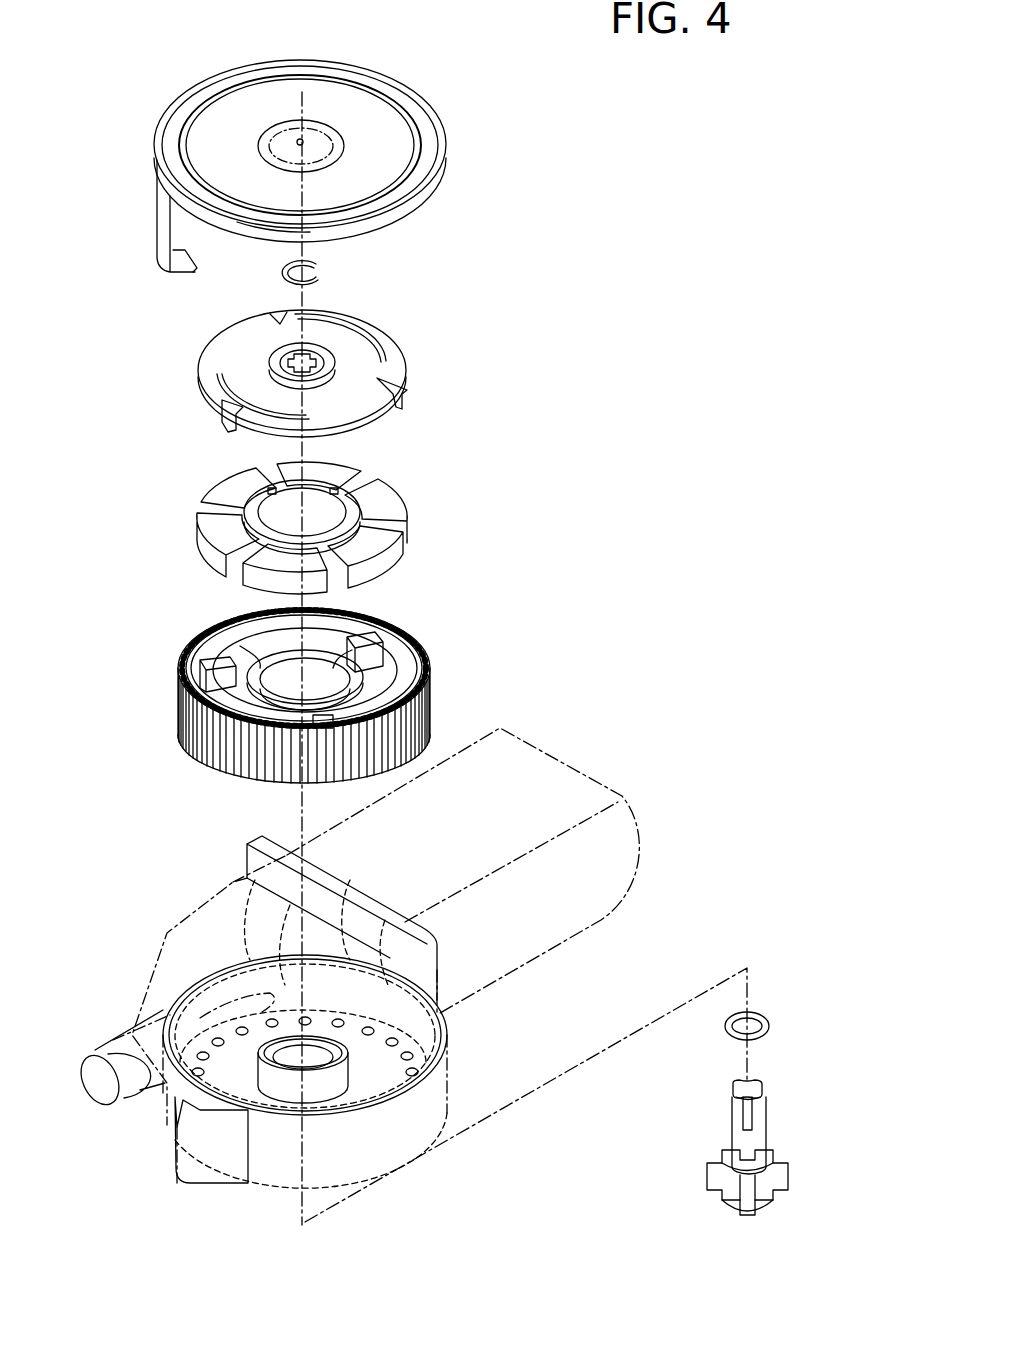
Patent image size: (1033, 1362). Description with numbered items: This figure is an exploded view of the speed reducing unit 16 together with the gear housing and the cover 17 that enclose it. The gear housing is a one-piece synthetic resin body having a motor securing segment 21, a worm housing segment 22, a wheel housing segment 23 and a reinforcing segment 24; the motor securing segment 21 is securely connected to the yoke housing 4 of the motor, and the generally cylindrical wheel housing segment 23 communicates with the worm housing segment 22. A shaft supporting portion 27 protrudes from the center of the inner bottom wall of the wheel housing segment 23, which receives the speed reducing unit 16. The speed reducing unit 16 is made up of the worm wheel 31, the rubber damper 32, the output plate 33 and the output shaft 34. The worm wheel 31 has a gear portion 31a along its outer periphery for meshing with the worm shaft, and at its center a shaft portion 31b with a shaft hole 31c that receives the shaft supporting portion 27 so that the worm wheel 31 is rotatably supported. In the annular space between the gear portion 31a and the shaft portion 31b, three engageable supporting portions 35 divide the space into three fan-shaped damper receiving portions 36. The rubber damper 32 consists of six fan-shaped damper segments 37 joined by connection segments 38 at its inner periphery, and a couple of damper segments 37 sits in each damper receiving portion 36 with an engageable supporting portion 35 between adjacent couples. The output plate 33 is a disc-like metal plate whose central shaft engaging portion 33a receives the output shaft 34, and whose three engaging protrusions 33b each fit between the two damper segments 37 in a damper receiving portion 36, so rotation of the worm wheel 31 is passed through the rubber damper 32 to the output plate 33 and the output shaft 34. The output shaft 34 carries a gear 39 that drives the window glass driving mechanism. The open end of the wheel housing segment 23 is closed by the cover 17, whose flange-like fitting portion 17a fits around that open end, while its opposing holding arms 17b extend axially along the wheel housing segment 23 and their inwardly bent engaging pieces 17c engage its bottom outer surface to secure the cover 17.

The yoke housing 4 is at (582, 910).
The speed reducing unit 16 is at (503, 449).
The cover 17 is at (427, 110).
The fitting portion 17a is at (413, 207).
The holding arm 17b is at (157, 216).
The engaging piece 17c is at (183, 280).
The motor securing segment 21 is at (245, 863).
The worm housing segment 22 is at (132, 1035).
The wheel housing segment 23 is at (430, 1087).
The reinforcing segment 24 is at (193, 937).
The shaft supporting portion 27 is at (305, 1092).
The worm wheel 31 is at (391, 629).
The gear portion 31a is at (423, 710).
The shaft portion 31b is at (262, 660).
The shaft hole 31c is at (325, 670).
The rubber damper 32 is at (470, 494).
The output plate 33 is at (416, 335).
The shaft engaging portion 33a is at (320, 357).
The engaging protrusion 33b is at (222, 418).
The output shaft 34 is at (772, 1114).
The engageable supporting portion 35 is at (193, 663).
The damper receiving portion 36 is at (397, 677).
The damper segment 37 is at (350, 462).
The connection segment 38 is at (344, 490).
The gear 39 is at (780, 1182).